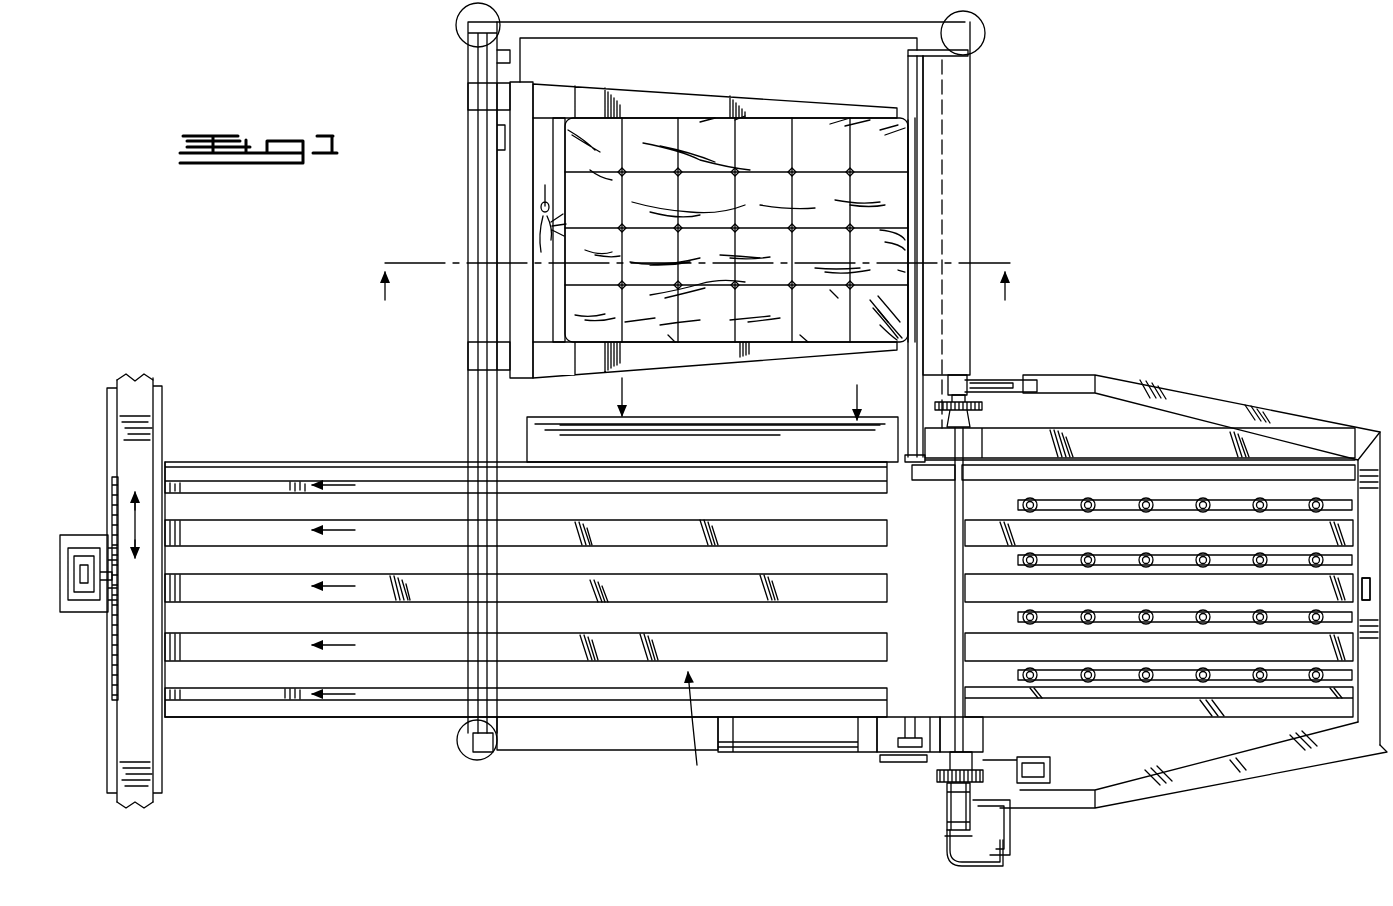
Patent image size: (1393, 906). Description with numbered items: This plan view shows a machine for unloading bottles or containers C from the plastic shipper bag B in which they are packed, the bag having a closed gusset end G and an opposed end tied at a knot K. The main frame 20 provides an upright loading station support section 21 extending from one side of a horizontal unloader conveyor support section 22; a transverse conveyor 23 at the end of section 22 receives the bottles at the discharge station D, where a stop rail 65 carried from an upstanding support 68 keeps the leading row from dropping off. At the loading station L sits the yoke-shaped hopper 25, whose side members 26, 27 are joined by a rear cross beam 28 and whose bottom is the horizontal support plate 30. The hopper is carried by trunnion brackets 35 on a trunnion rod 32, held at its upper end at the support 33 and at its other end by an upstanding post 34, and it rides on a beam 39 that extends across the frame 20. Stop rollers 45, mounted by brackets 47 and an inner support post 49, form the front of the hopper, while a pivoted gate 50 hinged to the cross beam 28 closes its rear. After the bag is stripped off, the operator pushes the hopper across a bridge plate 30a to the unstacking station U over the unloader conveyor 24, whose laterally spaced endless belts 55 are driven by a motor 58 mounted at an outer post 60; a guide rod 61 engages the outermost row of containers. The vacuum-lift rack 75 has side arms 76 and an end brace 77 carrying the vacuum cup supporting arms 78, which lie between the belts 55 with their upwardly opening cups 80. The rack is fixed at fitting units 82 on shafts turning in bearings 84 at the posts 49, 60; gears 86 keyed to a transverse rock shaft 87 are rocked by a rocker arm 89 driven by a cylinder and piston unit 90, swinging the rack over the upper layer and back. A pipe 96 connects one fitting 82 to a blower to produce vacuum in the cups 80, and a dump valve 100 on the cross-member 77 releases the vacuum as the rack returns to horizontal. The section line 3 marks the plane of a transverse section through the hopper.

The main frame 20 is at (978, 137).
The loading station support section 21 is at (965, 345).
The unloader conveyor support section 22 is at (406, 717).
The conveyor 23 is at (162, 432).
The unloader conveyor 24 is at (392, 718).
The hopper 25 is at (653, 76).
The side member 26 is at (714, 96).
The side member 27 is at (688, 366).
The rear cross beam 28 is at (515, 207).
The horizontal support plate 30 is at (590, 411).
The bridge plate 30a is at (748, 417).
The trunnion rod 32 is at (470, 404).
The support 33 is at (470, 26).
The upstanding post 34 is at (470, 756).
The trunnion brackets 35 is at (470, 100).
The beam 39 is at (470, 168).
The stop rollers 45 is at (915, 374).
The brackets 47 is at (975, 50).
The inner support post 49 is at (946, 30).
The pivoted gate 50 is at (560, 300).
The endless belts 55 is at (715, 582).
The motor 58 is at (775, 752).
The outer post 60 is at (975, 735).
The guide rod 61 is at (265, 462).
The stop rail 65 is at (116, 490).
The upstanding support 68 is at (72, 612).
The vacuum-lift rack 75 is at (1250, 770).
The side arms 76 is at (1172, 398).
The end brace 77 is at (1365, 660).
The vacuum cup supporting arms 78 is at (1276, 505).
The cups 80 is at (1203, 513).
The fitting units 82 is at (970, 380).
The bearings 84 is at (942, 758).
The second gear 86 is at (980, 412).
The transverse rock shaft 87 is at (962, 533).
The rocker arm 89 is at (990, 800).
The cylinder and piston unit 90 is at (1052, 768).
The pipe 96 is at (995, 862).
The dump valve 100 is at (1356, 590).
The section line 3- 3 is at (693, 269).
The plastic shipper bag B is at (815, 118).
The containers C is at (905, 166).
The discharge station D is at (155, 546).
The gusset end G is at (910, 212).
The knot K is at (550, 207).
The loading station L is at (886, 293).
The unstacking station U is at (696, 731).